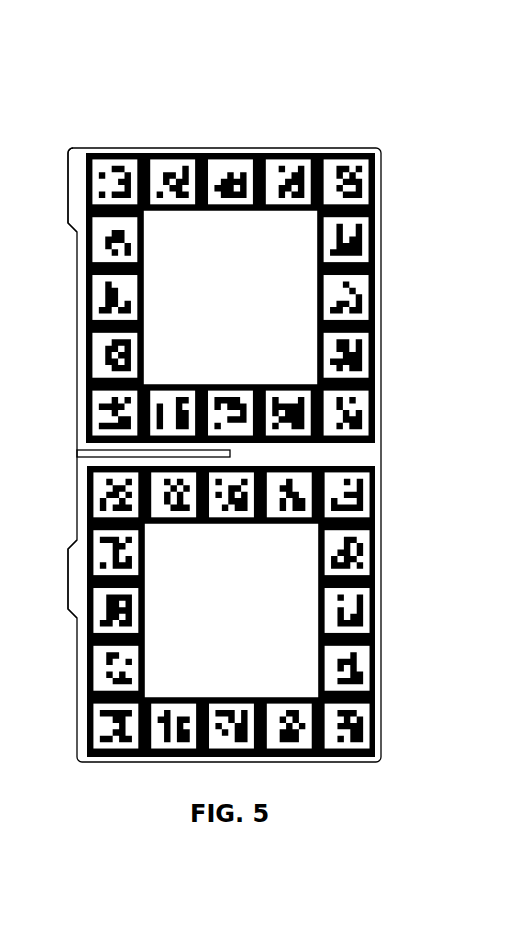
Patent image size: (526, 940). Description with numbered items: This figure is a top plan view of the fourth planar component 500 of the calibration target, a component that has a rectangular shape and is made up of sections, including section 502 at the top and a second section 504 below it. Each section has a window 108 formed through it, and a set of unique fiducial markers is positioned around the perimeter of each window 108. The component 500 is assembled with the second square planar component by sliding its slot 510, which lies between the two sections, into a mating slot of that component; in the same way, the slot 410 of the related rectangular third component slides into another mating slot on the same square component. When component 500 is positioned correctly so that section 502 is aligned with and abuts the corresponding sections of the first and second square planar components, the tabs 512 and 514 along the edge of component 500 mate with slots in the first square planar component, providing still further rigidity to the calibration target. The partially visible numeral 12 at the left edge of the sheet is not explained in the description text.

The component 500 is at (278, 100).
The section 502 is at (382, 220).
The second fiducial marker panel 504 is at (376, 590).
The slot 510 is at (76, 453).
The tab 512 is at (76, 184).
The tab 514 is at (79, 563).
The window 108 is at (246, 303).
The slot 410 is at (15, 55).
The component 12 is at (10, 297).